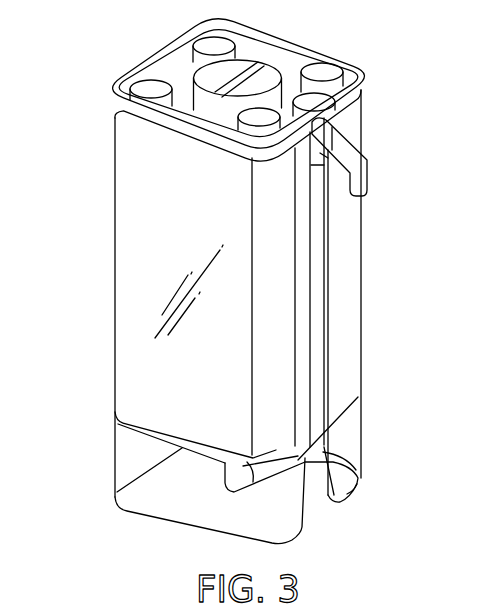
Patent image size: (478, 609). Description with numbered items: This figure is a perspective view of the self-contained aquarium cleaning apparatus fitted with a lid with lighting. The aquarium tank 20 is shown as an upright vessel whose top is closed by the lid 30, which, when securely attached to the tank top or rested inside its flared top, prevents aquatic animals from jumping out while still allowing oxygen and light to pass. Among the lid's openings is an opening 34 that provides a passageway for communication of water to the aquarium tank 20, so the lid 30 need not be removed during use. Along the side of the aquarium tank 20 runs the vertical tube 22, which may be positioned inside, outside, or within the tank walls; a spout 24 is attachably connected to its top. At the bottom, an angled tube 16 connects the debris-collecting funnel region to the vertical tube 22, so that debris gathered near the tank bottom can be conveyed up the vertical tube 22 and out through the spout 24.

The angled tube 16 is at (315, 445).
The aquarium tank 20 is at (138, 377).
The vertical tube 22 is at (318, 302).
The spout 24 is at (368, 176).
The lid 30 is at (306, 46).
The opening 34 is at (212, 69).